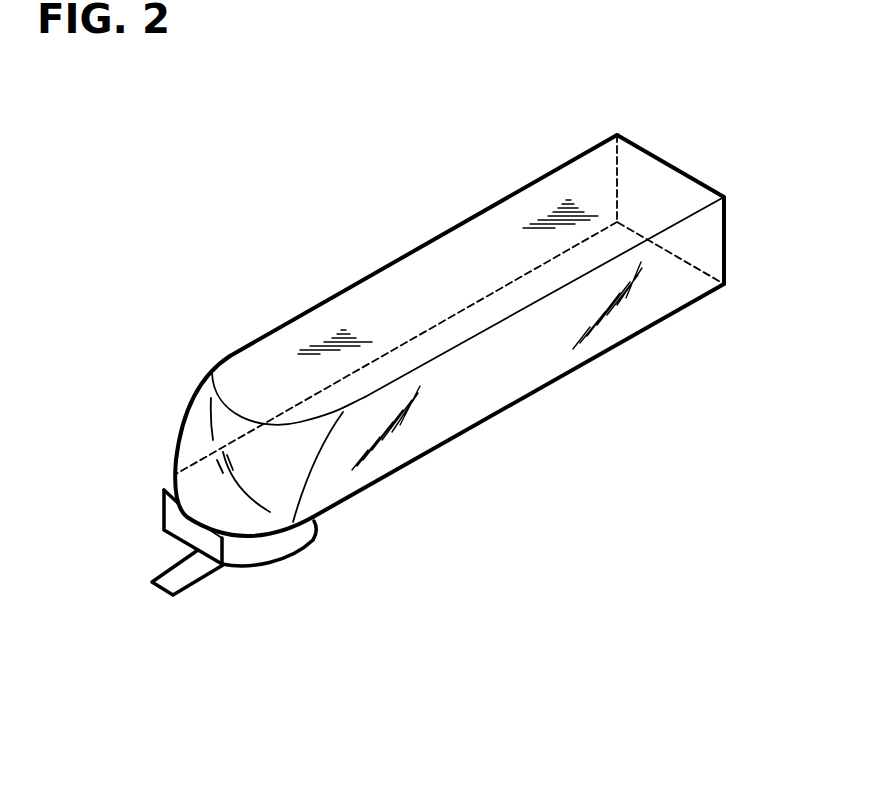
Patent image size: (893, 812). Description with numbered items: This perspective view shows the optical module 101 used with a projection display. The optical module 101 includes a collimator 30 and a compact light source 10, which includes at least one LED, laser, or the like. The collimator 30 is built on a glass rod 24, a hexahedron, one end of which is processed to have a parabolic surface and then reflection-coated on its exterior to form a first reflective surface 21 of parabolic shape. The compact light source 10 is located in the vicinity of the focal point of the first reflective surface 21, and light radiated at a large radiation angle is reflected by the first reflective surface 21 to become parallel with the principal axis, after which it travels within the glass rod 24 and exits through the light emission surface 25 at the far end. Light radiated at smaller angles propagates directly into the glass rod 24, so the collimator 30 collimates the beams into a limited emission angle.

The optical module 101 is at (372, 194).
The collimator 30 is at (538, 172).
The light emission surface 25 is at (668, 195).
The glass rod 24 is at (283, 345).
The first reflective surface 21 is at (208, 438).
The compact light source 10 is at (275, 572).